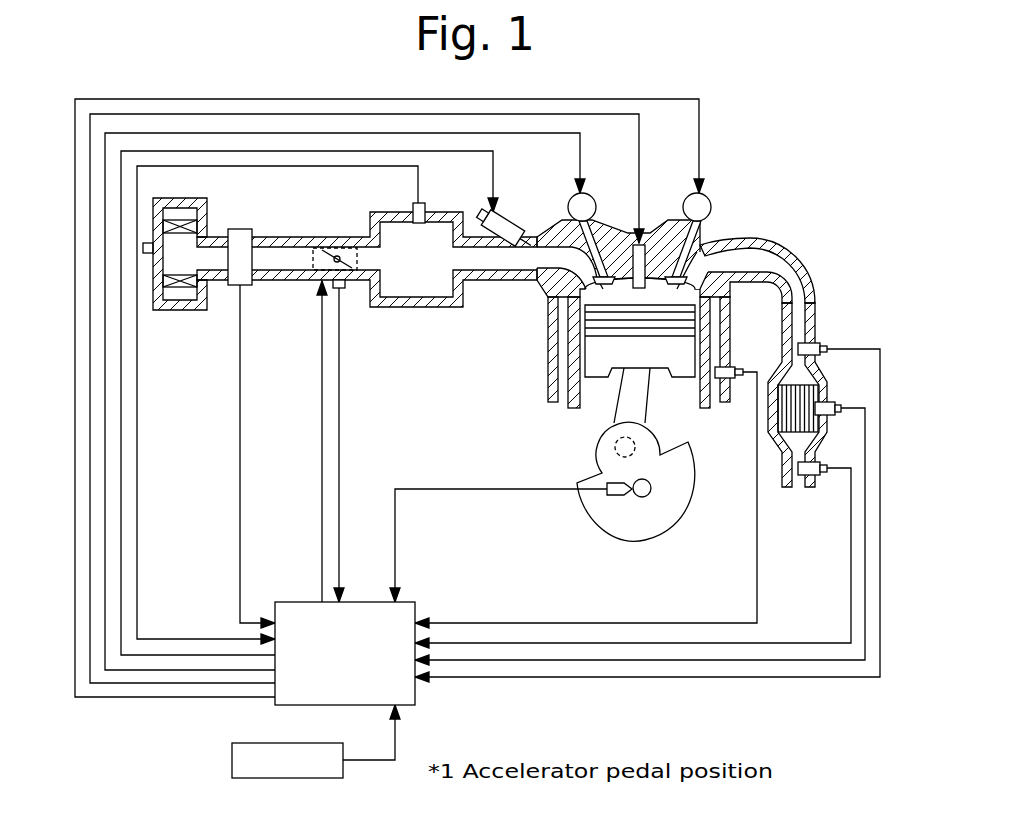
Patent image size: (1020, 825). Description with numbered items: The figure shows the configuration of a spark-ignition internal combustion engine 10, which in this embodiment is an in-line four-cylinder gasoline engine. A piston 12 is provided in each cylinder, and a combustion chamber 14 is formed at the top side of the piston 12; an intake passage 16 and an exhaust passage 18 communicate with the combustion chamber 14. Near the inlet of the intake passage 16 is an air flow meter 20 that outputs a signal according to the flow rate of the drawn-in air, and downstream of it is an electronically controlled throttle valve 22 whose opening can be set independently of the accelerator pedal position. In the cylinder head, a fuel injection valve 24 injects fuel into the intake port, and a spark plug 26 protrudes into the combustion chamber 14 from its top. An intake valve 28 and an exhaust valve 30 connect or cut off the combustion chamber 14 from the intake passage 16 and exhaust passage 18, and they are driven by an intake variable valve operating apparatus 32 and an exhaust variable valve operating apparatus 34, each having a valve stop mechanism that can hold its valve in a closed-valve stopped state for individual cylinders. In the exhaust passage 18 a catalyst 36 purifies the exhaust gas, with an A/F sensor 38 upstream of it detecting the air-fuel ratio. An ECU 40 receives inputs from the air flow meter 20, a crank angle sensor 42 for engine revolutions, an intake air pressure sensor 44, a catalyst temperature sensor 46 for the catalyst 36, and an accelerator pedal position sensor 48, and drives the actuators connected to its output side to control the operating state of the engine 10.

The internal combustion engine 10 is at (533, 362).
The piston 12 is at (600, 358).
The combustion chamber 14 is at (660, 298).
The intake passage 16 is at (364, 222).
The exhaust passage 18 is at (812, 240).
The air flow meter 20 is at (242, 235).
The throttle valve 22 is at (330, 252).
The fuel injection valve 24 is at (502, 215).
The spark plug 26 is at (637, 243).
The intake valve 28 is at (556, 232).
The exhaust valve 30 is at (722, 240).
The intake variable valve operating apparatus 32 is at (588, 195).
The exhaust variable valve operating apparatus 34 is at (708, 200).
The catalyst 36 is at (820, 390).
The A/F sensor 38 is at (830, 345).
The ECU 40 is at (418, 603).
The crank angle sensor 42 is at (612, 496).
The intake air pressure sensor 44 is at (425, 208).
The catalyst temperature sensor 46 is at (838, 416).
The accelerator pedal position sensor 48 is at (232, 760).